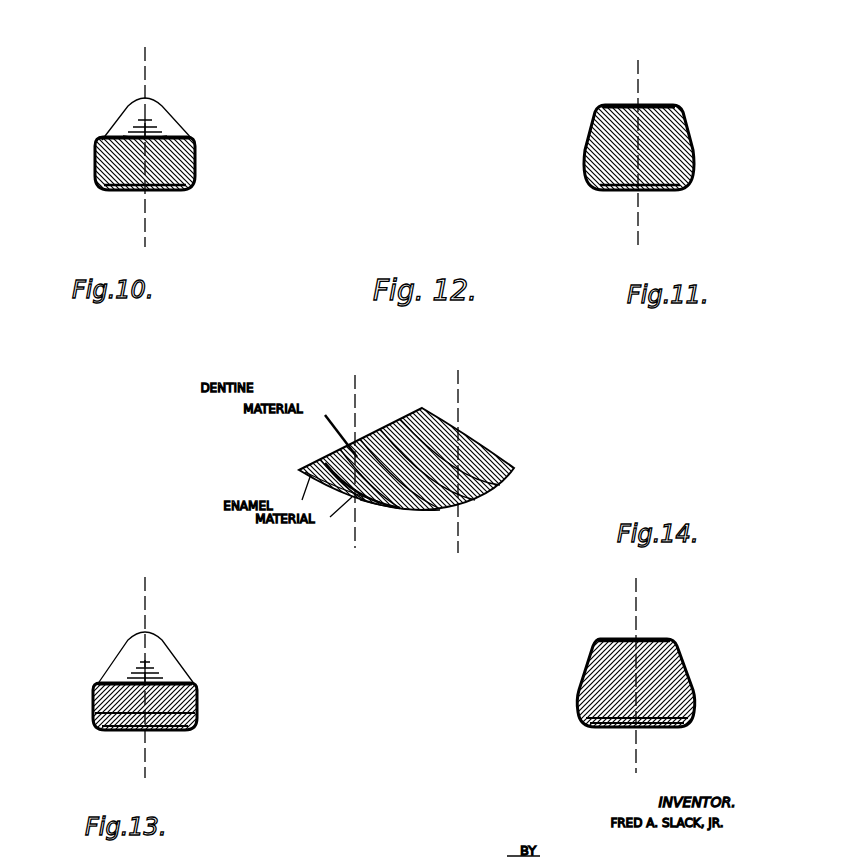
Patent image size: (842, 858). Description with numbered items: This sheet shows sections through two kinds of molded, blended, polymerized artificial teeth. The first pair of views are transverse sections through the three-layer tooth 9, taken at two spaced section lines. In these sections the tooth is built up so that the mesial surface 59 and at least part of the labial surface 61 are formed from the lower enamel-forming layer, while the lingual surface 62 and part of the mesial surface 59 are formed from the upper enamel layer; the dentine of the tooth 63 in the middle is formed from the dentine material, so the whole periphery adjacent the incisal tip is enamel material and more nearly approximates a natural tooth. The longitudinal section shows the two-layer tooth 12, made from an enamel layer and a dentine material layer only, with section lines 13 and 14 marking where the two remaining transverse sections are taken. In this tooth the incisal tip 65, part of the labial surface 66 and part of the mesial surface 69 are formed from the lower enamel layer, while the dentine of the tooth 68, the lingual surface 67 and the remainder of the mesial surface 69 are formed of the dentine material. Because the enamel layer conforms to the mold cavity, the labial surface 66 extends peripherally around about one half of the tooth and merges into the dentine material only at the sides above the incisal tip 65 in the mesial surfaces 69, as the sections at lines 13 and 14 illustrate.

In FIG. 10, the tooth 9 is at (145, 145).
In FIG. 11, the tooth 9 is at (640, 155).
In FIG. 13, the tooth 12 is at (145, 680).
In FIG. 14, the tooth 12 is at (636, 675).
In FIG. 12, the section line 13 is at (355, 466).
In FIG. 12, the section line 14 is at (458, 464).
In FIG. 10, the mesial surface 59 is at (193, 148).
In FIG. 11, the mesial surface 59 is at (600, 112).
In FIG. 10, the labial surface 61 is at (177, 187).
In FIG. 11, the labial surface 61 is at (610, 188).
In FIG. 10, the lingual surface 62 is at (170, 137).
In FIG. 11, the lingual surface 62 is at (625, 103).
In FIG. 10, the dentine of the tooth 63 is at (97, 157).
In FIG. 11, the dentine of the tooth 63 is at (585, 145).
In FIG. 12, the incisal tip 65 is at (327, 470).
In FIG. 12, the labial surface 66 is at (405, 510).
In FIG. 13, the labial surface 66 is at (173, 722).
In FIG. 14, the labial surface 66 is at (680, 727).
In FIG. 12, the lingual surface 67 is at (375, 437).
In FIG. 13, the lingual surface 67 is at (173, 682).
In FIG. 14, the lingual surface 67 is at (610, 638).
In FIG. 12, the dentine of the tooth 68 is at (408, 413).
In FIG. 13, the dentine of the tooth 68 is at (102, 688).
In FIG. 14, the dentine of the tooth 68 is at (590, 655).
In FIG. 13, the mesial surface 69 is at (95, 703).
In FIG. 14, the mesial surface 69 is at (577, 692).